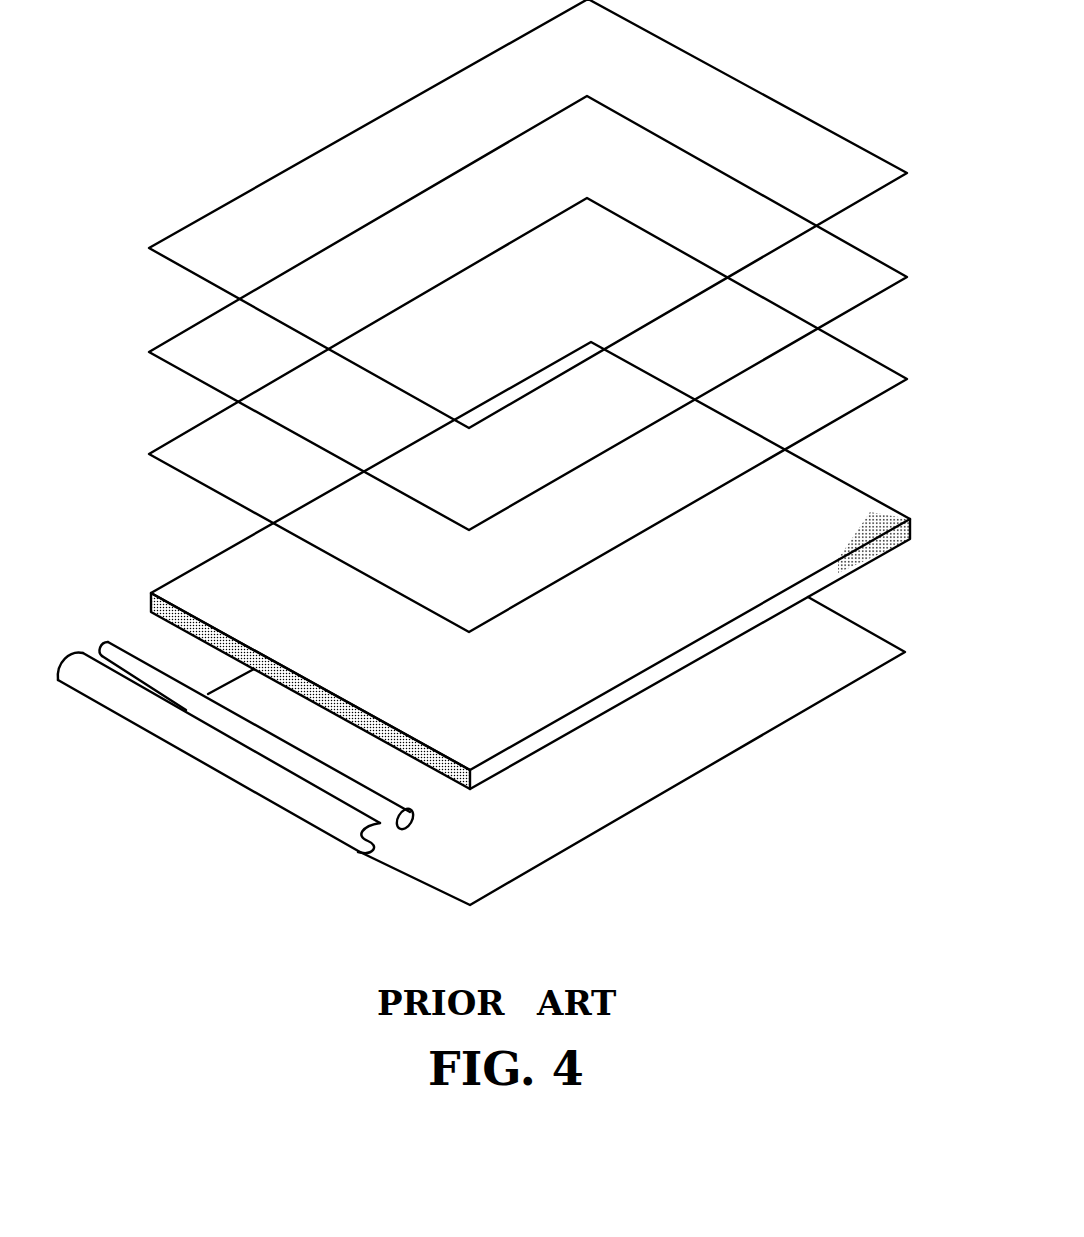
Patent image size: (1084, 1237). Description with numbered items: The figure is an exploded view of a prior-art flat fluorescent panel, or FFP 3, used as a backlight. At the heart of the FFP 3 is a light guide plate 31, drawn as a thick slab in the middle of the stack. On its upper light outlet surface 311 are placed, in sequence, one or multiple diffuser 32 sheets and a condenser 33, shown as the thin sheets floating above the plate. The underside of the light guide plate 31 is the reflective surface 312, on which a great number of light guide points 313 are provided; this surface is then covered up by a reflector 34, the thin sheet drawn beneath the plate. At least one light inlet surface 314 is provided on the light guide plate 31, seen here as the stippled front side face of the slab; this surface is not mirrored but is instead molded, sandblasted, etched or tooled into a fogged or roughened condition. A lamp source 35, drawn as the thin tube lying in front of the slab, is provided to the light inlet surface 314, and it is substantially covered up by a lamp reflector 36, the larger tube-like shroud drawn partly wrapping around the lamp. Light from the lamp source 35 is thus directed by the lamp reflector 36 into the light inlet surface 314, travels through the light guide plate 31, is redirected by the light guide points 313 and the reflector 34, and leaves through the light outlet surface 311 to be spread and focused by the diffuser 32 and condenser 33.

The FFP 3 is at (224, 78).
The light guide plate 31 is at (499, 604).
The light outlet surface 311 is at (240, 561).
The reflective surface 312 is at (531, 754).
The light guide points 313 is at (877, 557).
The light inlet surface 314 is at (226, 656).
The diffuser 32 is at (187, 376).
The condenser 33 is at (240, 228).
The reflector 34 is at (460, 885).
The lamp source 35 is at (398, 820).
The lamp reflector 36 is at (280, 796).